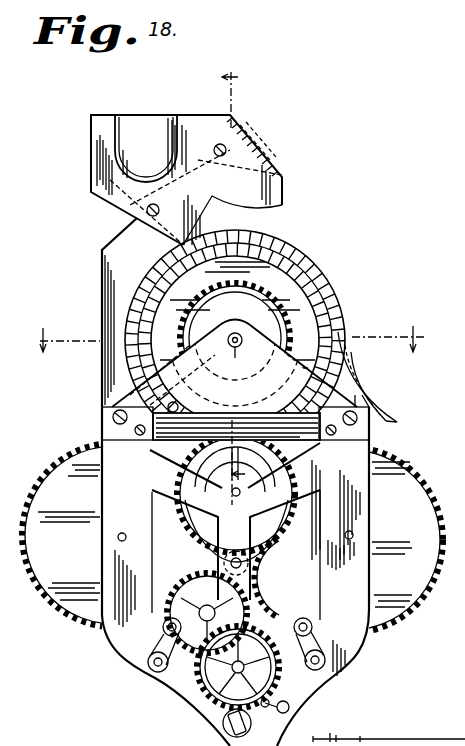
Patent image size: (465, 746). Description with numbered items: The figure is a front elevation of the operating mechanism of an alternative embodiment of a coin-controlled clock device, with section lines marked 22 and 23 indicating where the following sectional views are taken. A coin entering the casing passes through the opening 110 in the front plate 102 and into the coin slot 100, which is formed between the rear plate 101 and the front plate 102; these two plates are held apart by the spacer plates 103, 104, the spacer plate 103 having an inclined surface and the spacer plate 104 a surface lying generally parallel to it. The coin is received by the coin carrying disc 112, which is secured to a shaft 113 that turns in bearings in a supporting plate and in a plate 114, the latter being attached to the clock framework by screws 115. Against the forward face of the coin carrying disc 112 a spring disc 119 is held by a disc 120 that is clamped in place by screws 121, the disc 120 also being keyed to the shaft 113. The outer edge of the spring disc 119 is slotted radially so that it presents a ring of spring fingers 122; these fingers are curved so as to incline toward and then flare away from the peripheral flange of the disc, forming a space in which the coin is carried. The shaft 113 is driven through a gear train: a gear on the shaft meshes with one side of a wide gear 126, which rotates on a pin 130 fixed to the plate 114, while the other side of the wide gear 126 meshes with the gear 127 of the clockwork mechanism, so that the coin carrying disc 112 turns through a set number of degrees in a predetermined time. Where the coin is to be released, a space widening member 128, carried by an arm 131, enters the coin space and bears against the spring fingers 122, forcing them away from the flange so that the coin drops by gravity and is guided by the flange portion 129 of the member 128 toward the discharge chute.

The section line 22- 22 is at (241, 285).
The section line 23- 23 is at (228, 339).
The coin slot 100 is at (238, 215).
The rear plate 101 is at (402, 738).
The front plate 102 is at (92, 147).
The spacer plate 103 is at (108, 178).
The spacer plate 104 is at (262, 157).
The opening 110 is at (142, 122).
The coin carrying disc 112 is at (306, 246).
The shaft 113 is at (235, 340).
The plate 114 is at (132, 390).
The screws 115 is at (136, 447).
The spring disc 119 is at (285, 283).
The disc 120 is at (297, 270).
The screws 121 is at (342, 318).
The spring fingers 122 is at (330, 310).
The wide gear 126 is at (212, 402).
The gear 127 is at (202, 600).
The space widening member 128 is at (378, 389).
The flange portion 129 is at (368, 409).
The pin 130 is at (133, 393).
The arm 131 is at (362, 385).